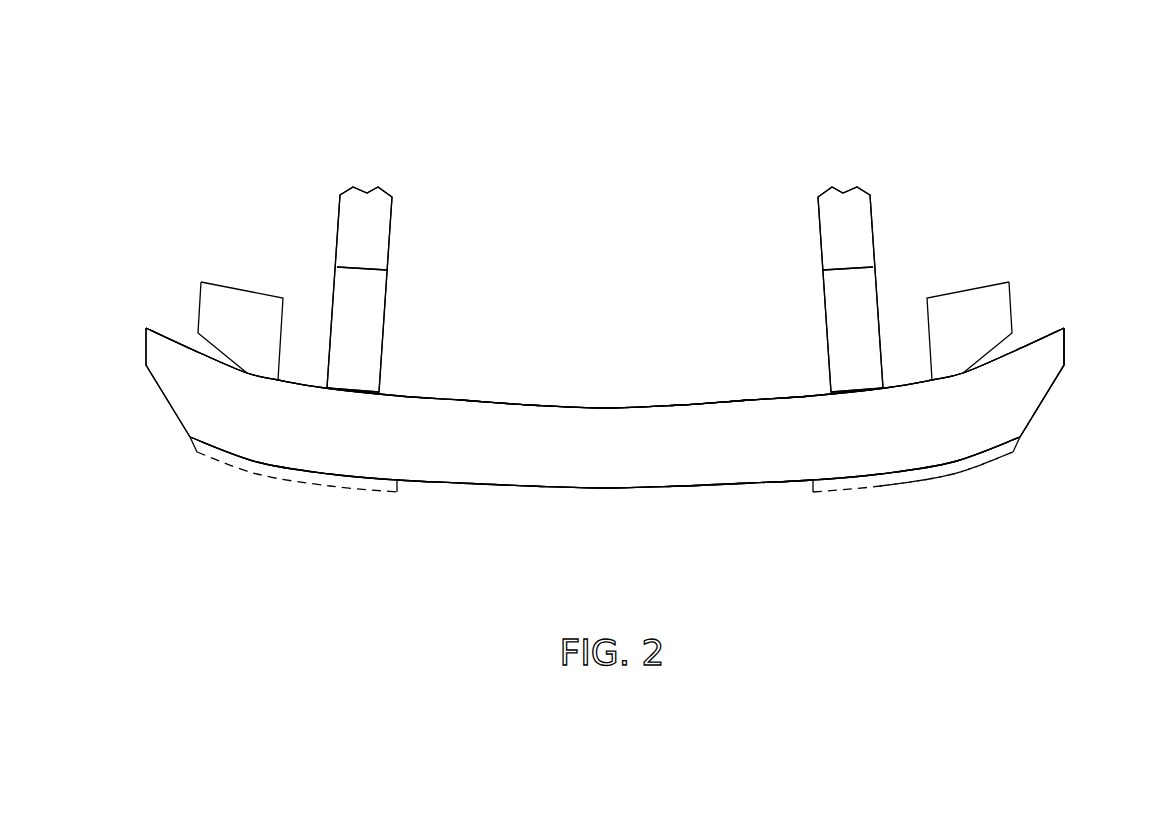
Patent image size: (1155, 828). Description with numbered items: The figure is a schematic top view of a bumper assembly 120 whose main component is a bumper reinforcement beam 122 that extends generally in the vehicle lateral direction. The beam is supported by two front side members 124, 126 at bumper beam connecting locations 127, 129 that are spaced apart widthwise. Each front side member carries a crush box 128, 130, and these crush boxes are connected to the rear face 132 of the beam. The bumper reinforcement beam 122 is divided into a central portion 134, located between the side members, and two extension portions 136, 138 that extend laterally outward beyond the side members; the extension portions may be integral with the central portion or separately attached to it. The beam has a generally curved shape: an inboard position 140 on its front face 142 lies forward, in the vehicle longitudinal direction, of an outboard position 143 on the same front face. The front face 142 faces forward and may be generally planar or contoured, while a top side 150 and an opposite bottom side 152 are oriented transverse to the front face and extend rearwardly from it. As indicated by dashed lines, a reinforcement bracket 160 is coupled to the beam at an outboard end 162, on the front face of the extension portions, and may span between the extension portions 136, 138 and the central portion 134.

The bumper assembly 120 is at (1050, 230).
The bumper reinforcement beam 122 is at (599, 365).
The front side member 124 is at (322, 220).
The front side member 126 is at (885, 198).
The bumper beam connecting location 127 is at (345, 395).
The crush box 128 is at (385, 317).
The bumper beam connecting location 129 is at (852, 397).
The crush box 130 is at (823, 333).
The rear face 132 is at (440, 400).
The central portion 134 is at (560, 530).
The extension portion 136 is at (177, 452).
The extension portion 138 is at (1018, 482).
The inboard position 140 is at (610, 490).
The front face 142 is at (723, 488).
The outboard position 143 is at (923, 465).
The top side 150 is at (462, 473).
The bottom side 152 is at (703, 390).
The reinforcement bracket 160 is at (303, 483).
The outboard end 162 is at (1063, 350).